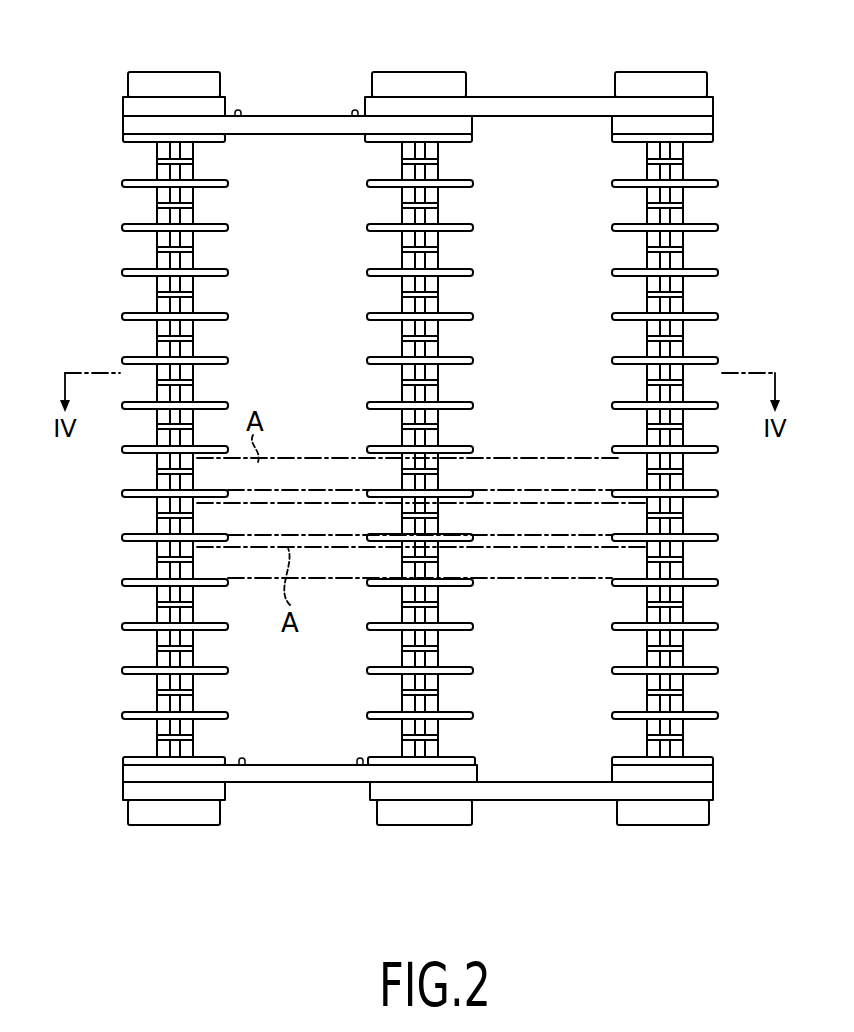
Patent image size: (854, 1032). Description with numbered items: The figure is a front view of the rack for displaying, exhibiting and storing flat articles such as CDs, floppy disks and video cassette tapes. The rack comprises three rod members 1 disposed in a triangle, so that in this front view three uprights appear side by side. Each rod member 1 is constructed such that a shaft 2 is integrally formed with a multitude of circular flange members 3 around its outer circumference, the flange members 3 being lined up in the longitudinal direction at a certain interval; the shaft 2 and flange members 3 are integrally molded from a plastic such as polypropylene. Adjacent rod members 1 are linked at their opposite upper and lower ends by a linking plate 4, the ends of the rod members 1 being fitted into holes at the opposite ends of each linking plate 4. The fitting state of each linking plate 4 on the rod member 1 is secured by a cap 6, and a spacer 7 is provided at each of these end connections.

The rod member 1 is at (409, 449).
The shaft 2 is at (195, 285).
The flange member 3 is at (123, 272).
The linking plate 4 is at (293, 116).
The cap 6 is at (172, 78).
The spacer 7 is at (135, 103).